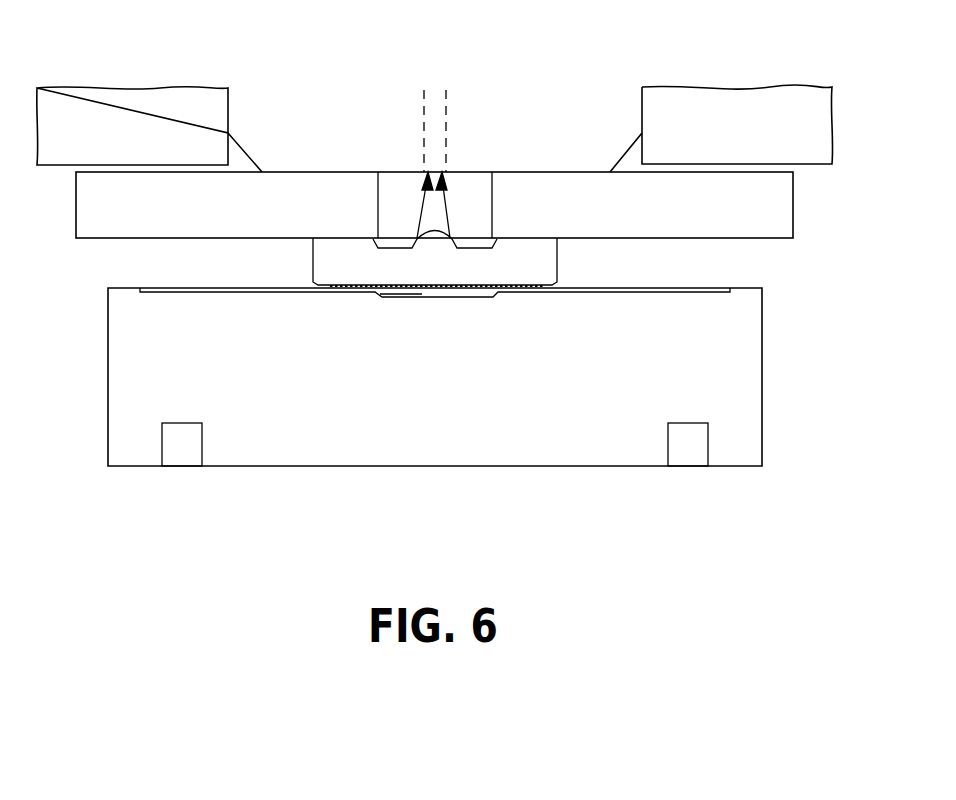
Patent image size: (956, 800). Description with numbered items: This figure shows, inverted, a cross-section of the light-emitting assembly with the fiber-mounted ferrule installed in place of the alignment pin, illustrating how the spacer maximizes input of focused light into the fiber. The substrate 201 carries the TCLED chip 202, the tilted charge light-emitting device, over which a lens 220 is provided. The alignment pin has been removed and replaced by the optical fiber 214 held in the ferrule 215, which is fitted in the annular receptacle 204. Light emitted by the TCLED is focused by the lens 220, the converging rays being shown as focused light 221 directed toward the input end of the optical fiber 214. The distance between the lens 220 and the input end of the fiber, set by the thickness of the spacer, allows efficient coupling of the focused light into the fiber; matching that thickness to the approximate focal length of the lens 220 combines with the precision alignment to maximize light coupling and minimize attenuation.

The substrate 201 is at (337, 428).
The TCLED chip 202 is at (385, 268).
The annular receptacle 204 is at (102, 120).
The optical fiber 214 is at (437, 105).
The ferrule 215 is at (316, 92).
The lens 220 is at (435, 255).
The focused light 221 is at (450, 200).